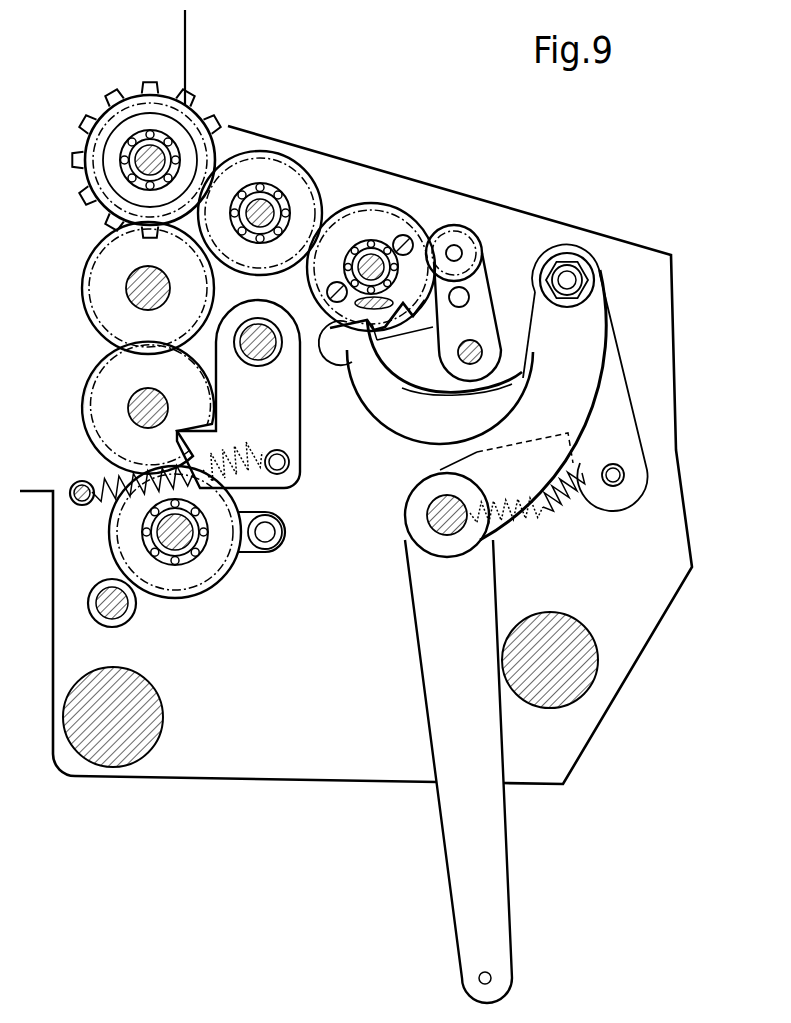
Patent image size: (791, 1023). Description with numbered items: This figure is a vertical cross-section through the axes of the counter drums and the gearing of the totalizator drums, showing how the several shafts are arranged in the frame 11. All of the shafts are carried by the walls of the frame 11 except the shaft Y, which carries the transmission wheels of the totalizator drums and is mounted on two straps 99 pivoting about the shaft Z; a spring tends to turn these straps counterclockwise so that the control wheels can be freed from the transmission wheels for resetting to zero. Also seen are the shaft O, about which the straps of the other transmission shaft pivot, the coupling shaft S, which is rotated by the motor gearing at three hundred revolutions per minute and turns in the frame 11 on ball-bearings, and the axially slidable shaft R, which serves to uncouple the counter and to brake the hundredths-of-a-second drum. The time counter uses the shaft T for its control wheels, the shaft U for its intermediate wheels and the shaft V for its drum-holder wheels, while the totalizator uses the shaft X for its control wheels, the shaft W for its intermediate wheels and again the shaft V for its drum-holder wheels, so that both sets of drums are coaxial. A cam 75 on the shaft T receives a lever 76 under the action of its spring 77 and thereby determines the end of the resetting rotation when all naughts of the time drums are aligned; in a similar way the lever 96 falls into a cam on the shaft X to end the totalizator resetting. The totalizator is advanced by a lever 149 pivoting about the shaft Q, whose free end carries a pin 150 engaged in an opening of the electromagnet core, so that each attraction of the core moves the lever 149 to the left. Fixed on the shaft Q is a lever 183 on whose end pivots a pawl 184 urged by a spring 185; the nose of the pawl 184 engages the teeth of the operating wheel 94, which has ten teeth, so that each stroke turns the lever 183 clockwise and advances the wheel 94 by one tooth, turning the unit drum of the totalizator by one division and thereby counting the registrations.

The frame 11 is at (195, 758).
The shaft V is at (132, 167).
The shaft W is at (262, 207).
The shaft X is at (373, 262).
The shaft Y is at (455, 250).
The shaft U is at (130, 290).
The shaft T is at (143, 412).
The cam 75 is at (105, 387).
The lever 76 is at (290, 405).
The shaft O is at (265, 335).
The spring 77 is at (98, 505).
The coupling shaft S is at (173, 548).
The shaft R is at (95, 615).
The shaft Q is at (432, 523).
The shaft Z is at (480, 348).
The straps 99 is at (482, 293).
The operating wheel 94 is at (393, 338).
The lever 96 is at (345, 345).
The pawl 184 is at (398, 420).
The lever 183 is at (580, 343).
The spring 185 is at (543, 510).
The lever 149 is at (487, 860).
The pin 150 is at (492, 976).